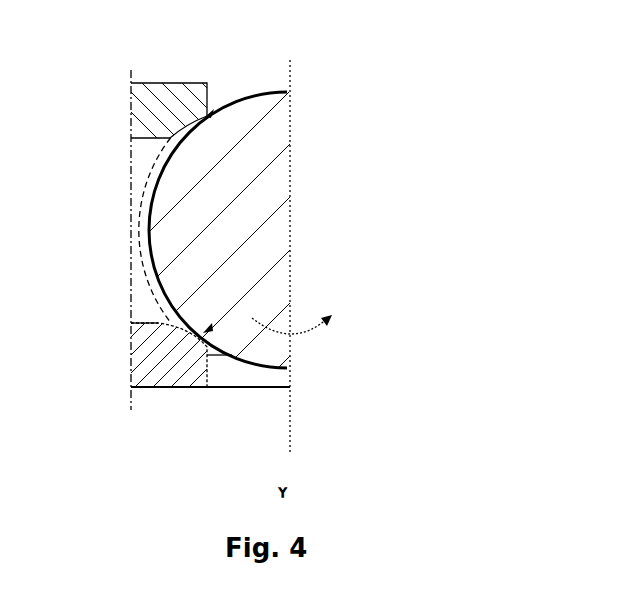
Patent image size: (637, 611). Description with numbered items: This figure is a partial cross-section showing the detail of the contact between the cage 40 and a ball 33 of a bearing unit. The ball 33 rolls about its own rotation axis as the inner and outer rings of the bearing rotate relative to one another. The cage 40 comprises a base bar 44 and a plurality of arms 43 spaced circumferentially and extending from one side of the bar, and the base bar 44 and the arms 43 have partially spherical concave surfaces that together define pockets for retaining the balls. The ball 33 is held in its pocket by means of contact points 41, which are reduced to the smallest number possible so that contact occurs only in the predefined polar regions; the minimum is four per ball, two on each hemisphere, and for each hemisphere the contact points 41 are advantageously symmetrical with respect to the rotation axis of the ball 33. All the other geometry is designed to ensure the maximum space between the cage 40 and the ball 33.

The cage 40 is at (93, 202).
The ball 33 is at (268, 172).
The contact points 41 is at (209, 113).
The arms 43 is at (153, 96).
The base bar 44 is at (232, 370).